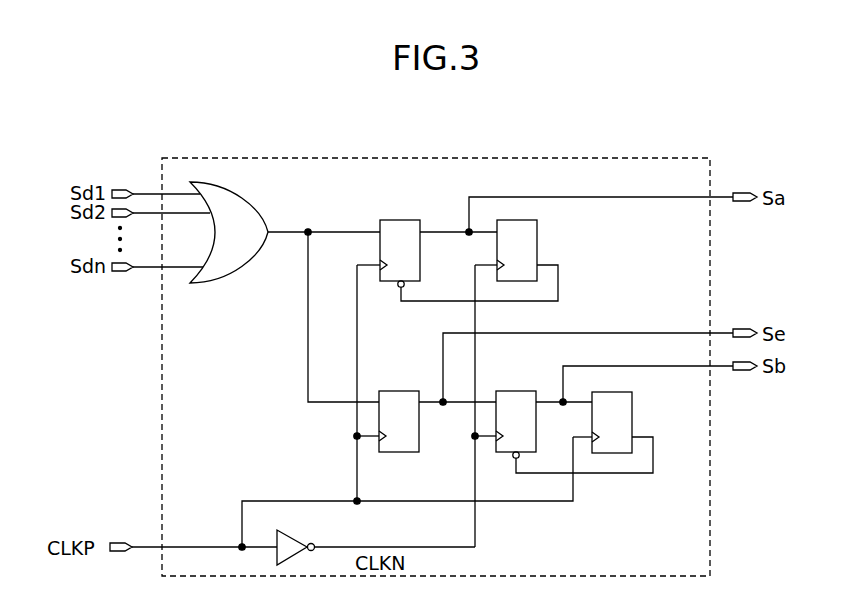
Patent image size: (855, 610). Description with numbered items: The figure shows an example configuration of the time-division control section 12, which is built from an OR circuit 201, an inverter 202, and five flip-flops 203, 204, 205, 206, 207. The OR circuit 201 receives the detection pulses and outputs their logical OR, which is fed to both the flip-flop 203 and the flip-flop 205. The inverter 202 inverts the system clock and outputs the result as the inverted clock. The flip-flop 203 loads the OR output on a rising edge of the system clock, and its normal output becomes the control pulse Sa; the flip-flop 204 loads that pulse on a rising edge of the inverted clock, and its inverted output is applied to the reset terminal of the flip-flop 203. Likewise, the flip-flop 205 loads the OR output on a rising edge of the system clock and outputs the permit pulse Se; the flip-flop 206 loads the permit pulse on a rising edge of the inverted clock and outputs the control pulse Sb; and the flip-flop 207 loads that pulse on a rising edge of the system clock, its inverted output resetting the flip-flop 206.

The time-division control section 12 is at (452, 158).
The OR circuit 201 is at (252, 196).
The inverter 202 is at (292, 532).
The flip-flop 203 is at (397, 218).
The flip-flop 204 is at (538, 228).
The flip-flop 205 is at (398, 390).
The flip-flop 206 is at (516, 390).
The flip-flop 207 is at (634, 406).